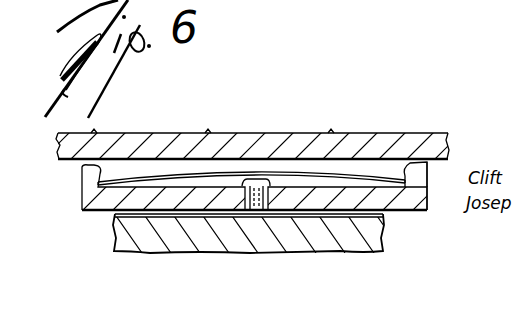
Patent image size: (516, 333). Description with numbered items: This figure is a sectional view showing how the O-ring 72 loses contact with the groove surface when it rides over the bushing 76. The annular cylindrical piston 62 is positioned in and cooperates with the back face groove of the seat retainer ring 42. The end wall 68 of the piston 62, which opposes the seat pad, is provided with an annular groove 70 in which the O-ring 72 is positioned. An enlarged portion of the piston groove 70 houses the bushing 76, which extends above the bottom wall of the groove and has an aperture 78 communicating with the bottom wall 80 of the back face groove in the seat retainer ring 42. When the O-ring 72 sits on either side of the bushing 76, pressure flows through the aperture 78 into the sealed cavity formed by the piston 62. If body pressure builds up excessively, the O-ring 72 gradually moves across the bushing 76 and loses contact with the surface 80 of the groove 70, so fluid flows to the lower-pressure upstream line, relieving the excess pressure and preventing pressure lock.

The seat retainer ring 42 is at (375, 233).
The piston 62 is at (90, 212).
The end wall 68 is at (417, 168).
The annular groove 70 is at (410, 166).
The O-ring 72 is at (363, 168).
The bushing 76 is at (264, 197).
The aperture 78 is at (257, 210).
The bottom wall 80 is at (292, 182).